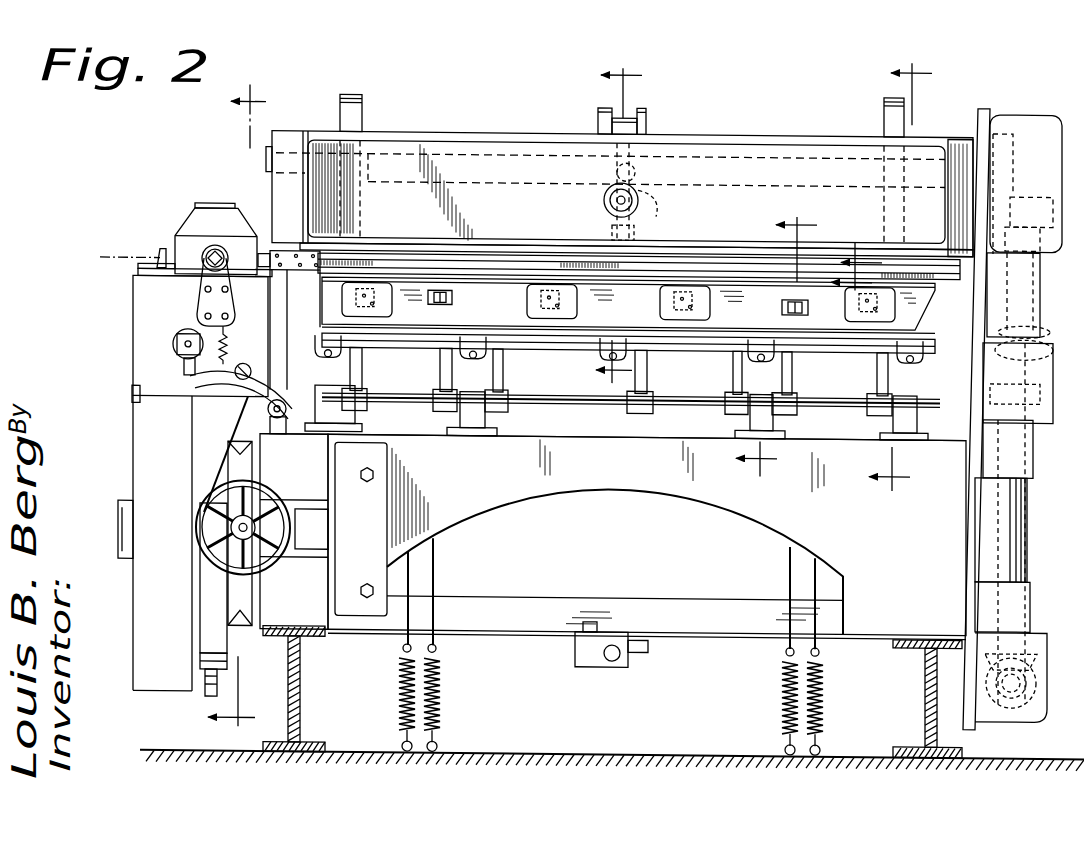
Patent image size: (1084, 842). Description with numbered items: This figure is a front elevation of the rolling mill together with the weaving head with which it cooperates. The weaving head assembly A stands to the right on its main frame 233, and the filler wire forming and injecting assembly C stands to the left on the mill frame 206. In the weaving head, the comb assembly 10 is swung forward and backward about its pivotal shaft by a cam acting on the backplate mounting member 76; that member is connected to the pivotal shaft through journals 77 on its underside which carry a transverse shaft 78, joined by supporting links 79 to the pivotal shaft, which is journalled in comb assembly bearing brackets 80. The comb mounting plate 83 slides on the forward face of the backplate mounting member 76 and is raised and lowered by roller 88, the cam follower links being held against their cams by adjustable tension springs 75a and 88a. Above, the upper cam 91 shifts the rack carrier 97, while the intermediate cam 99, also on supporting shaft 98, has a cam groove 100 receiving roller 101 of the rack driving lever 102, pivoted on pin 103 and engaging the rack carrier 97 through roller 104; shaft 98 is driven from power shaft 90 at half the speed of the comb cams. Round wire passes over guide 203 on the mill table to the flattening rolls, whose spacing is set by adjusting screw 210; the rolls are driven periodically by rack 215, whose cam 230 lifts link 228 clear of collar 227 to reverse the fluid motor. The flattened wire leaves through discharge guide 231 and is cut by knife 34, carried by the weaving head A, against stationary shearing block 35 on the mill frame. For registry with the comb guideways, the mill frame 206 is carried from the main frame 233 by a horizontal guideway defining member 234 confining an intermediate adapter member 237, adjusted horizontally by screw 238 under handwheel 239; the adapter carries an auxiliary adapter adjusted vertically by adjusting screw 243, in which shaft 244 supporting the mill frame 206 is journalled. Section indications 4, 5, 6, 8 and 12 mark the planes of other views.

The weaving head assembly A is at (742, 130).
The filler wire forming and injecting assembly C is at (186, 222).
The section line 4 is at (908, 278).
The section line 5 is at (627, 232).
The section line 6 is at (776, 346).
The section line 8 is at (852, 265).
The comb assembly 10 is at (416, 256).
The section line 12 is at (252, 406).
The knife 34 is at (318, 322).
The stationary shearing block 35 is at (310, 276).
The adjustable tension spring 75a is at (400, 694).
The backplate mounting member 76 is at (410, 334).
The journals 77 is at (468, 358).
The transverse shaft 78 is at (700, 352).
The supporting links 79 is at (446, 378).
The comb assembly bearing brackets 80 is at (478, 438).
The comb mounting plate 83 is at (515, 316).
The roller 88 is at (440, 292).
The adjustable tension spring 88a is at (442, 704).
The power shaft 90 is at (1011, 690).
The upper cam 91 is at (363, 106).
The rack carrier 97 is at (706, 252).
The supporting shaft 98 is at (462, 154).
The intermediate cam 99 is at (597, 110).
The cam groove 100 is at (642, 112).
The roller 101 is at (614, 170).
The rack driving lever 102 is at (663, 206).
The pin 103 is at (604, 198).
The roller 104 is at (612, 232).
The guide 203 is at (158, 252).
The mill frame 206 is at (131, 306).
The adjusting screw 210 is at (215, 250).
The rack 215 is at (186, 342).
The collar 227 is at (281, 426).
The link 228 is at (248, 393).
The cam 230 is at (184, 366).
The discharge guide 231 is at (262, 246).
The weaving head main frame 233 is at (400, 500).
The first horizontal guideway defining member 234 is at (262, 468).
The intermediate adapter member 237 is at (242, 593).
The screw 238 is at (228, 532).
The handwheel 239 is at (214, 482).
The adjusting screw 243 is at (262, 668).
The shaft 244 is at (118, 508).